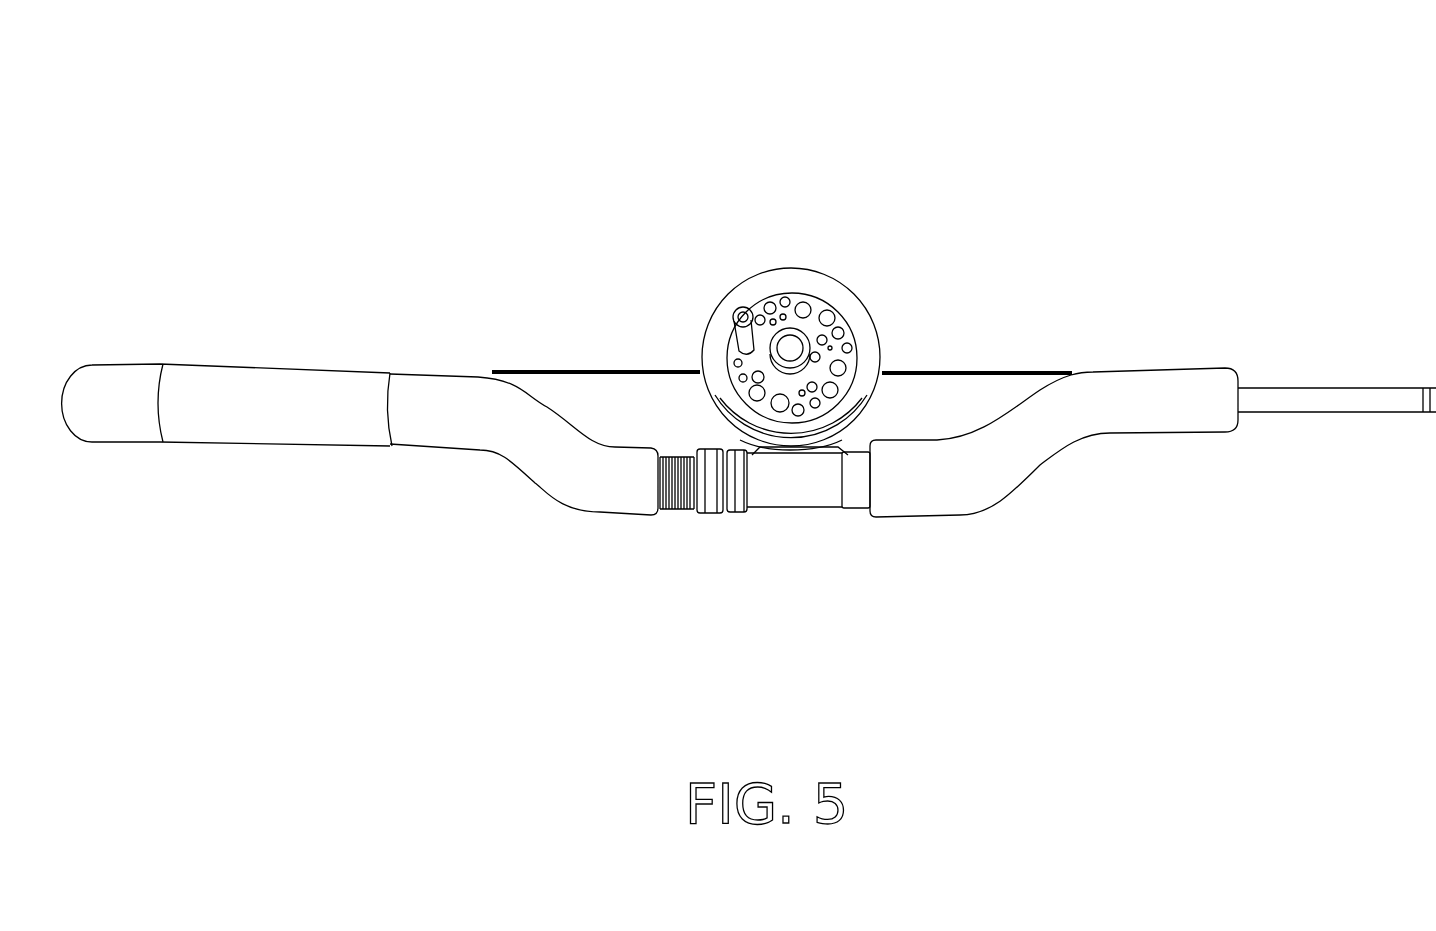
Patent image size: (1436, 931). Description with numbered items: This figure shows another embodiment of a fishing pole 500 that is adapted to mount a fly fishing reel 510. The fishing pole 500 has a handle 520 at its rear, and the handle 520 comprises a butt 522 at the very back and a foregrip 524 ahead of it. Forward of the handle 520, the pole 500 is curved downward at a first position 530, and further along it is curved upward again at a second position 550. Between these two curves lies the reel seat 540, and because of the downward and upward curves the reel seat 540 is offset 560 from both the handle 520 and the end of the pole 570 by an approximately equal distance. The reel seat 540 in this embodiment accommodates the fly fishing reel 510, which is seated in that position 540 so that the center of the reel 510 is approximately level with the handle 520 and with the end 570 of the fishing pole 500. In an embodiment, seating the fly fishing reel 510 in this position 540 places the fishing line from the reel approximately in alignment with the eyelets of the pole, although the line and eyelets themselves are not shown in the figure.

The fishing pole 500 is at (275, 116).
The fly fishing reel 510 is at (702, 304).
The handle 520 is at (261, 358).
The butt 522 is at (179, 452).
The foregrip 524 is at (429, 452).
The first position 530 is at (515, 487).
The reel seat 540 is at (752, 524).
The second position 550 is at (1075, 470).
The offset 560 is at (999, 360).
The end of the pole 570 is at (1271, 381).